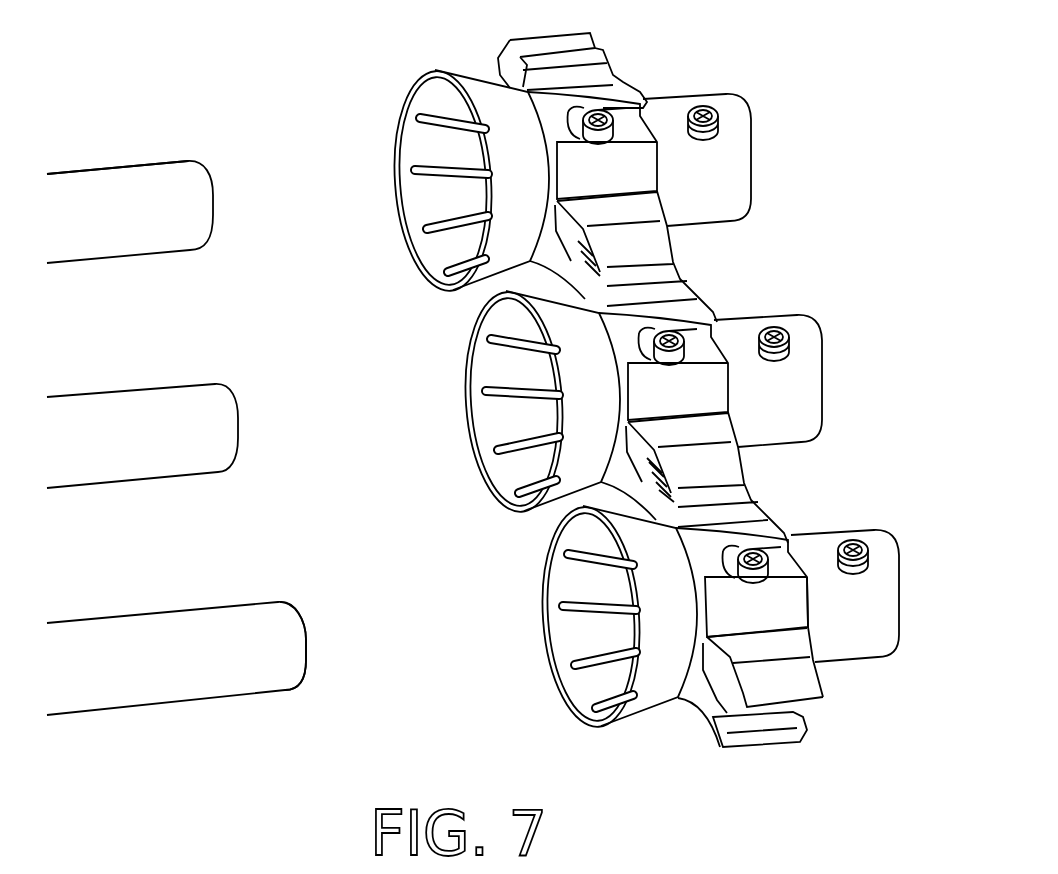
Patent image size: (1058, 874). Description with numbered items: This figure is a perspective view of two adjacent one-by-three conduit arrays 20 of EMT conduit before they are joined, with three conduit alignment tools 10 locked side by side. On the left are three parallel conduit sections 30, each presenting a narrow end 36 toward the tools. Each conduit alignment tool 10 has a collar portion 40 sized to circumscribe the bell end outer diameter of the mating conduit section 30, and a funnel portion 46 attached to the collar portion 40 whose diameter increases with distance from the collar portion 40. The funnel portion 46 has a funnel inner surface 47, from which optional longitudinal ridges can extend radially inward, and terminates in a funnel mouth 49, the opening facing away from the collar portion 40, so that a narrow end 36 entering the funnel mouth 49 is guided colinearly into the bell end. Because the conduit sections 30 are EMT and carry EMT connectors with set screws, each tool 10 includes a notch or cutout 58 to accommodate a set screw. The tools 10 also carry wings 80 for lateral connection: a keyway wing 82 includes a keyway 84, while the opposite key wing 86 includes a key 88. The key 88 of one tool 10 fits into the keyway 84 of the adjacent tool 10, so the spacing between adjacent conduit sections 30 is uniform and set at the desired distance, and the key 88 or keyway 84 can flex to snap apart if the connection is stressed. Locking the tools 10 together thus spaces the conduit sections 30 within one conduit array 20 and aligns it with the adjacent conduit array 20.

The conduit alignment tool 10 is at (637, 733).
The conduit array 20 is at (116, 128).
The conduit section 30 is at (157, 162).
The narrow end 36 is at (307, 668).
The collar portion 40 is at (800, 643).
The funnel portion 46 is at (650, 707).
The funnel inner surface 47 is at (583, 703).
The funnel mouth 49 is at (520, 598).
The notch or cutout 58 is at (787, 532).
The wings 80 is at (745, 450).
The keyway wing 82 is at (757, 467).
The keyway 84 is at (783, 443).
The key wing 86 is at (788, 517).
The key 88 is at (767, 483).